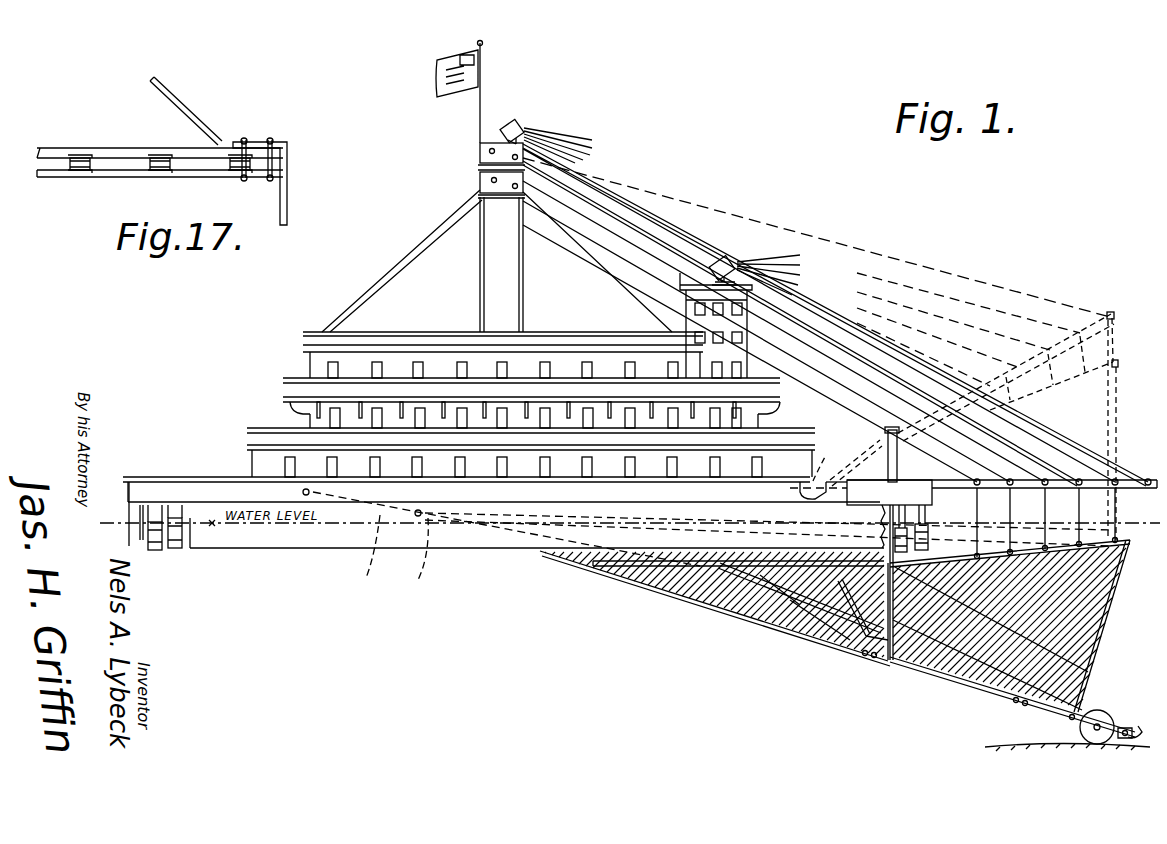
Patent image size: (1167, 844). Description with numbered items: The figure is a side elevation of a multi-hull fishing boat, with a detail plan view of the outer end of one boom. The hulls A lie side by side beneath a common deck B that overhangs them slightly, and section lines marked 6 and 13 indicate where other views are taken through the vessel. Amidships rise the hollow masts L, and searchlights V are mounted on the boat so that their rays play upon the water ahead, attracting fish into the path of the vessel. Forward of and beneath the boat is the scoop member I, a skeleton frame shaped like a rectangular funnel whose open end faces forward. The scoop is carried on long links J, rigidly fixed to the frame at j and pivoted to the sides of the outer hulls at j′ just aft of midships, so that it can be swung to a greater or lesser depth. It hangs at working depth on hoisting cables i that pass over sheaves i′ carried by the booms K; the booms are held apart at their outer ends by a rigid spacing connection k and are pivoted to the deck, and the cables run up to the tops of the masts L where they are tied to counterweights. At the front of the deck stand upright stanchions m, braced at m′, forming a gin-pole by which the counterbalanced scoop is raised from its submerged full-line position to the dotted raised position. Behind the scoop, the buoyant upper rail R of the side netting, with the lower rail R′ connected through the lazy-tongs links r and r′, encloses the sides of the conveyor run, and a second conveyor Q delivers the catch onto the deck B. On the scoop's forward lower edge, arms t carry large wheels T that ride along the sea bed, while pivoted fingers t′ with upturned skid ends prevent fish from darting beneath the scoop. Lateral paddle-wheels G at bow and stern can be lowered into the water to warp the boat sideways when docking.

In FIG. 1, the hull A is at (282, 545).
In FIG. 1, the deck B is at (200, 495).
In FIG. 1, the hollow mast L is at (518, 280).
In FIG. 1, the searchlight V is at (513, 128).
In FIG. 1, the boom K is at (1148, 480).
In FIG. 17, the boom K is at (58, 148).
In FIG. 1, the hoisting cable i is at (1010, 500).
In FIG. 1, the upright stanchion m is at (897, 468).
In FIG. 1, the brace m′ is at (888, 452).
In FIG. 1, the lateral paddle-wheel G is at (180, 548).
In FIG. 1, the second conveyor Q is at (367, 560).
In FIG. 1, the pivot j′ is at (416, 562).
In FIG. 1, the link J is at (673, 590).
In FIG. 1, the upper rail R is at (700, 568).
In FIG. 1, the lower rail R′ is at (722, 570).
In FIG. 1, the lazy-tongs link r′ is at (800, 617).
In FIG. 1, the lazy-tongs link r is at (838, 583).
In FIG. 1, the attachment point j is at (887, 653).
In FIG. 1, the scoop member I is at (965, 680).
In FIG. 1, the forwardly extending arm t is at (1070, 723).
In FIG. 1, the pivoted finger t′ is at (1142, 743).
In FIG. 1, the wheel T is at (1067, 765).
In FIG. 1, the section line 6- 6 is at (476, 623).
In FIG. 1, the section line 13- 13 is at (145, 560).
In FIG. 17, the sheave i′ is at (100, 158).
In FIG. 17, the spacing connection k is at (293, 173).